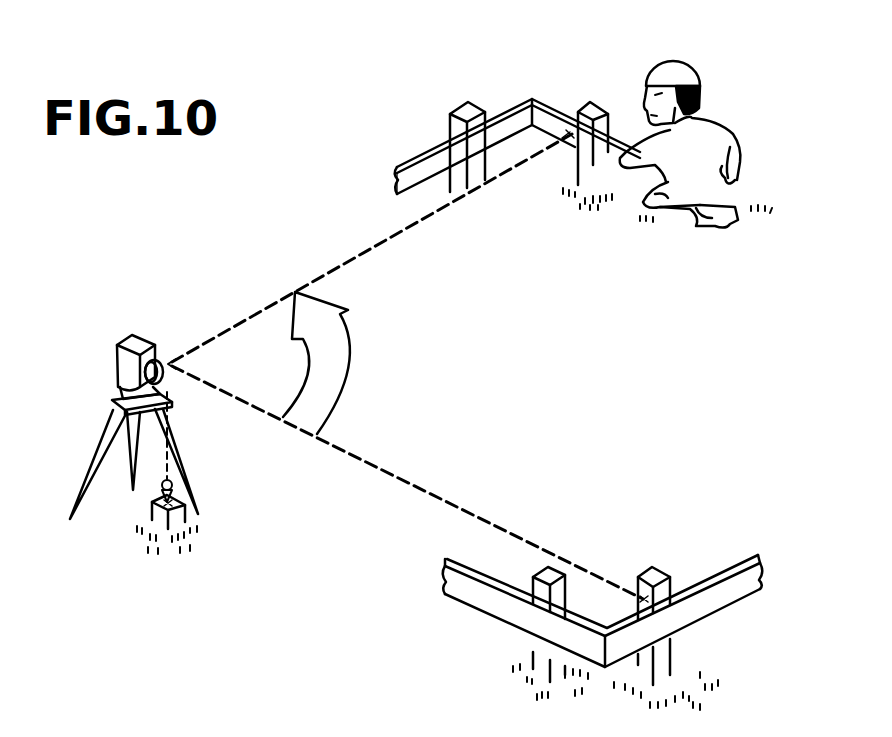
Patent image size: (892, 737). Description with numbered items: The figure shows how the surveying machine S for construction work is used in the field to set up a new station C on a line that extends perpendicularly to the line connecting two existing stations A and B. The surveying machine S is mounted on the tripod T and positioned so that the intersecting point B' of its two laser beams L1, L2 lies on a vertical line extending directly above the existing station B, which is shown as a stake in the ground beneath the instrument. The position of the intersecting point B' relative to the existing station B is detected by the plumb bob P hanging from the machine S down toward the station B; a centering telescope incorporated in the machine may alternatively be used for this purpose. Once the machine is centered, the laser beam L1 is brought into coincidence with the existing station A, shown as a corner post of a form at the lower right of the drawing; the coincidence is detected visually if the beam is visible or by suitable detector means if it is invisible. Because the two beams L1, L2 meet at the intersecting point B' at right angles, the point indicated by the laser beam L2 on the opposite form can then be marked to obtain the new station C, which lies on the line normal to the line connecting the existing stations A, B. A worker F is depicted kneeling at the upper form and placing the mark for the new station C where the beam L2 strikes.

The surveying machine S is at (122, 360).
The intersecting point B' is at (185, 321).
The tripod T is at (102, 440).
The plumb bob P is at (170, 416).
The existing station B is at (147, 524).
The new station C is at (585, 132).
The worker F is at (692, 145).
The existing station A is at (647, 596).
The laser beam L1 is at (436, 482).
The laser beam L2 is at (388, 240).